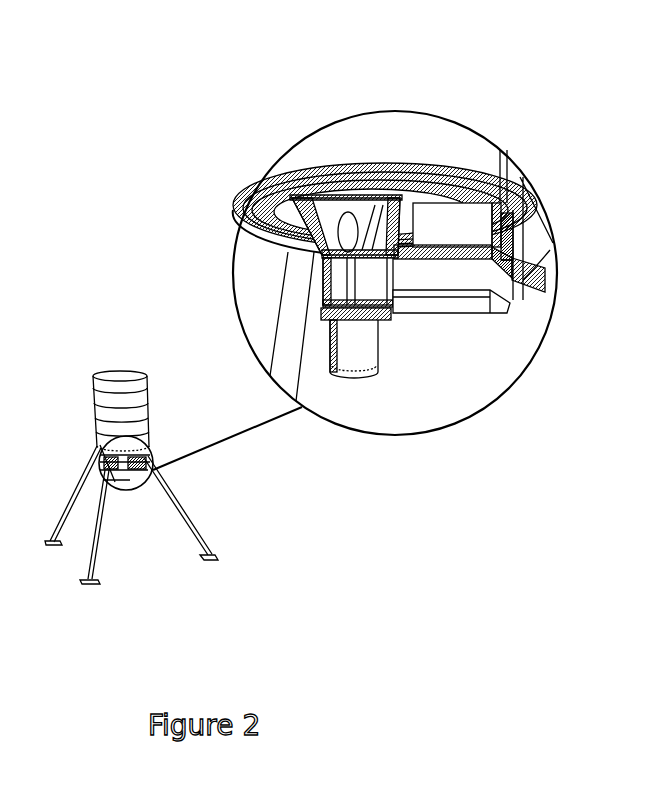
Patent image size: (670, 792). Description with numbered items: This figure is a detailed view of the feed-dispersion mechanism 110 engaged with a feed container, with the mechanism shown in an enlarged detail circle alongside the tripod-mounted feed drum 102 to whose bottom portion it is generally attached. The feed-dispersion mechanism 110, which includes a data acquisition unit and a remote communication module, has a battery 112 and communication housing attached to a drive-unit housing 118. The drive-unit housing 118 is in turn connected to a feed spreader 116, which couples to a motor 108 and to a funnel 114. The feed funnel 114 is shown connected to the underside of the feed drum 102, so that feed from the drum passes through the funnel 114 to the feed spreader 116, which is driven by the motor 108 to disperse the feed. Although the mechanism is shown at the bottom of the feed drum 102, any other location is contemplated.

The feed drum 102 is at (358, 143).
The motor 108 is at (362, 360).
The feed-dispersion mechanism 110 is at (463, 378).
The battery 112 is at (465, 222).
The funnel 114 is at (262, 200).
The feed spreader 116 is at (332, 288).
The drive-unit housing 118 is at (462, 273).